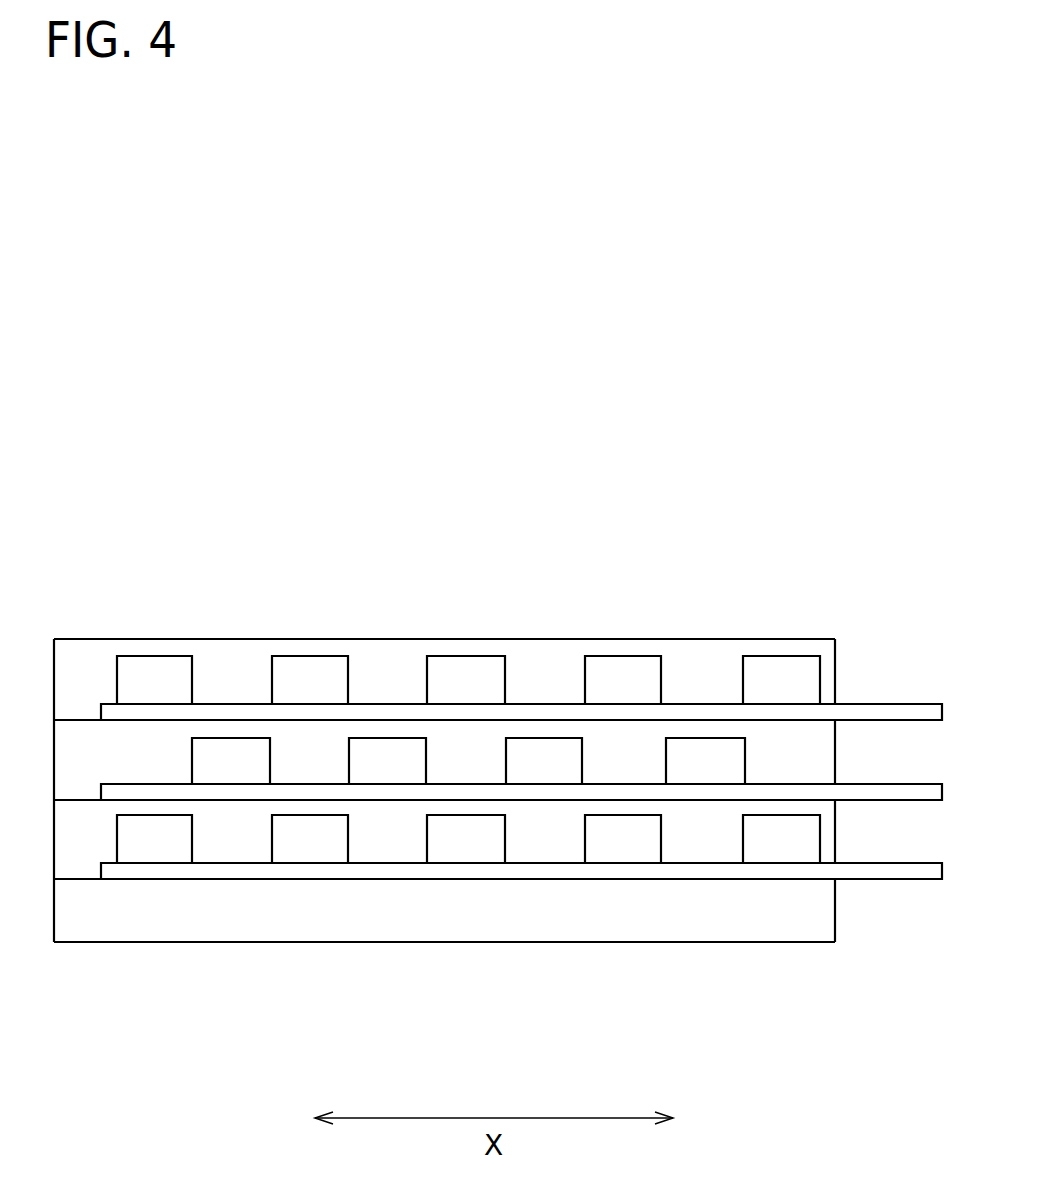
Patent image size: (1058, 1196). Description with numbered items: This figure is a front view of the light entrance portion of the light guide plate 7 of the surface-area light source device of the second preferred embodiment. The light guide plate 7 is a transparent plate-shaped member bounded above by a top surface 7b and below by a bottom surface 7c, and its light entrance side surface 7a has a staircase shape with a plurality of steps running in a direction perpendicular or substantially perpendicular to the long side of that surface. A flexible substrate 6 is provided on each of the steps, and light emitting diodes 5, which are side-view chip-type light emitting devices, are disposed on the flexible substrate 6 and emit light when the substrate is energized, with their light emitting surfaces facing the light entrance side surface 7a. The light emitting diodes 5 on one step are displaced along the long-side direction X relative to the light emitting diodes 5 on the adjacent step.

The light emitting diode 5 is at (151, 863).
The flexible substrate 6 is at (865, 880).
The light guide plate 7 is at (835, 943).
The light entrance side surface 7a is at (236, 681).
The top surface 7b is at (423, 640).
The bottom surface 7c is at (308, 943).